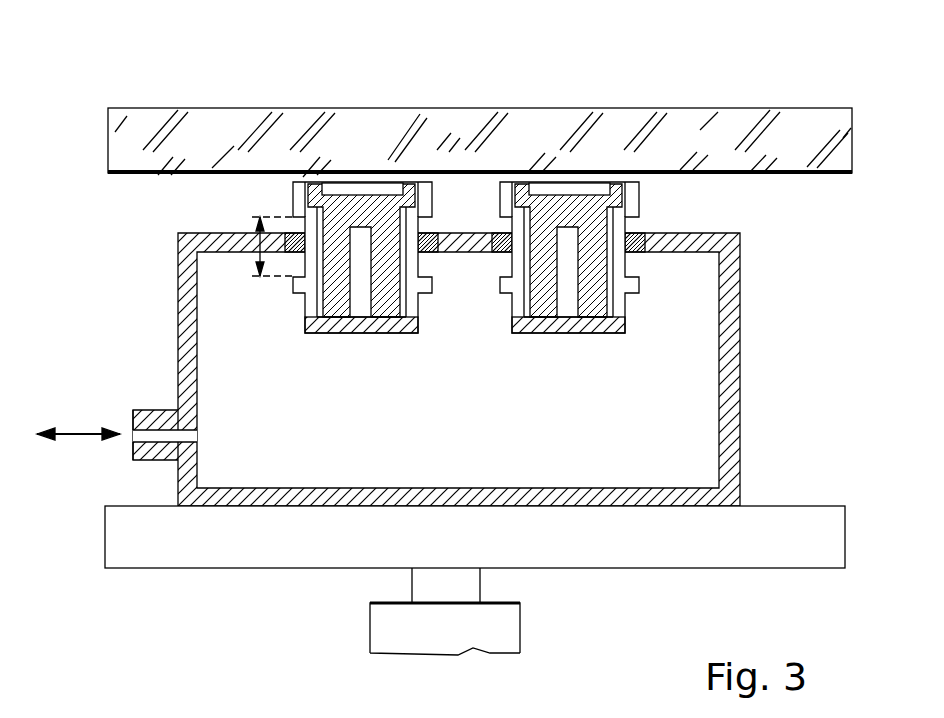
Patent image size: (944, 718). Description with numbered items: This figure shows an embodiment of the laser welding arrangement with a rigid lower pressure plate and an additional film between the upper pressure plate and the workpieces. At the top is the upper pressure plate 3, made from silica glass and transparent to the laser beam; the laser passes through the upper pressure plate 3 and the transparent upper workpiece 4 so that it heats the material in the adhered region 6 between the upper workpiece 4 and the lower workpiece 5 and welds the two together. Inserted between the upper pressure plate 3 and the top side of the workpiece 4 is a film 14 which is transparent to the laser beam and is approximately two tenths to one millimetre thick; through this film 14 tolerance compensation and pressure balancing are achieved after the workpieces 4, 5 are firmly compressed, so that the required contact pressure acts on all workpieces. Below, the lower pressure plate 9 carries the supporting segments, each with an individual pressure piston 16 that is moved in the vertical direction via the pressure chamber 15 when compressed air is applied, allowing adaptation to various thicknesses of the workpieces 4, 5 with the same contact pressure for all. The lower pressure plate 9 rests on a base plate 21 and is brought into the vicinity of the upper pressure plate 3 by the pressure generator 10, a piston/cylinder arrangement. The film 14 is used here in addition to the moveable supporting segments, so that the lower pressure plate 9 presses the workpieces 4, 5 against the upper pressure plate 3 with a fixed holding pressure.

The upper pressure plate 3 is at (186, 118).
The upper workpiece 4 is at (338, 182).
The lower workpiece 5 is at (365, 193).
The adhered region 6 is at (399, 186).
The lower pressure plate 9 is at (192, 340).
The pressure generator 10 is at (385, 632).
The film 14 is at (782, 176).
The pressure chamber 15 is at (222, 386).
The pressure piston 16 is at (370, 333).
The base plate 21 is at (184, 557).